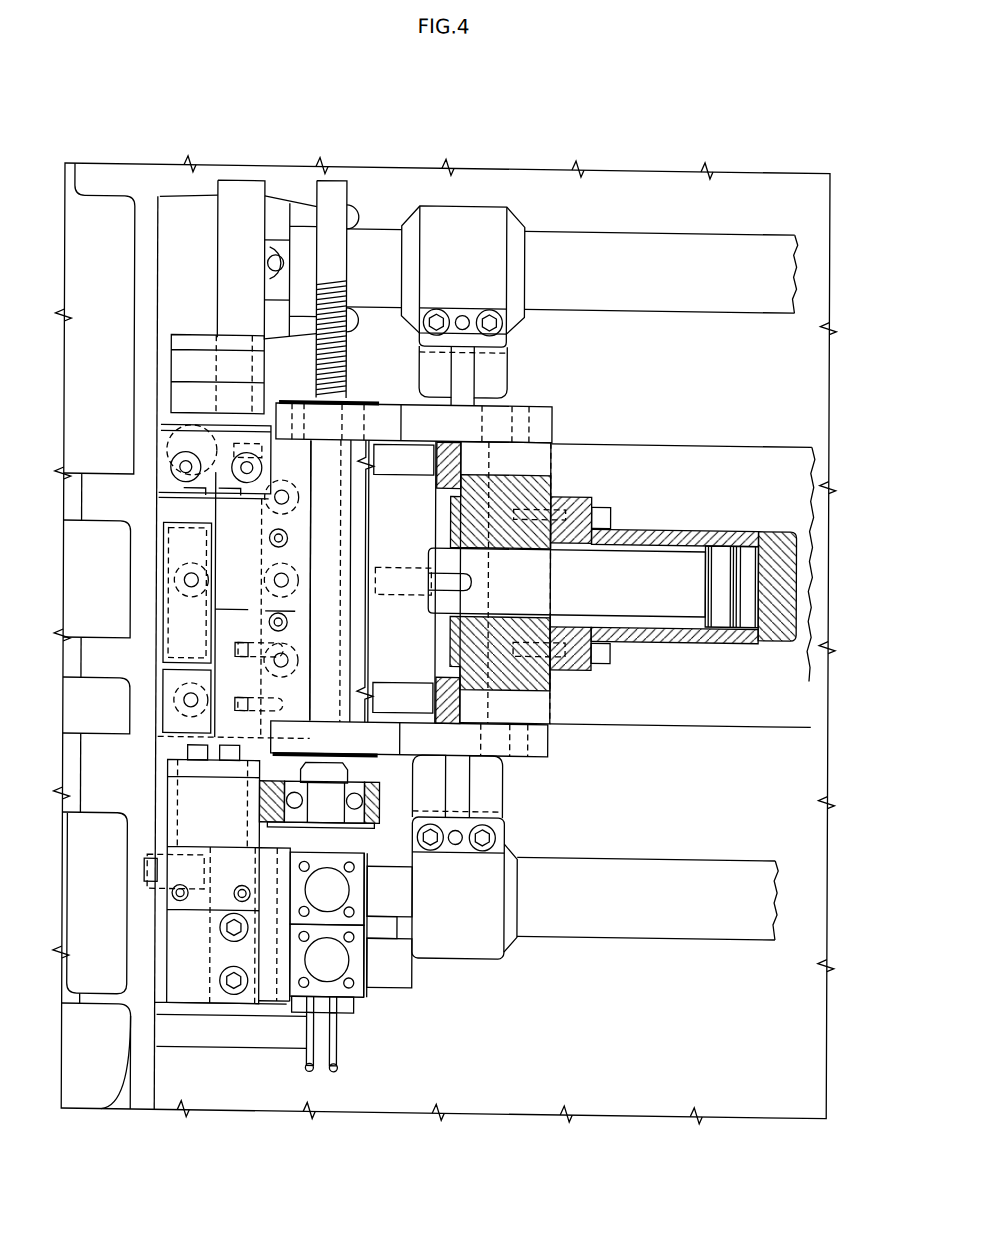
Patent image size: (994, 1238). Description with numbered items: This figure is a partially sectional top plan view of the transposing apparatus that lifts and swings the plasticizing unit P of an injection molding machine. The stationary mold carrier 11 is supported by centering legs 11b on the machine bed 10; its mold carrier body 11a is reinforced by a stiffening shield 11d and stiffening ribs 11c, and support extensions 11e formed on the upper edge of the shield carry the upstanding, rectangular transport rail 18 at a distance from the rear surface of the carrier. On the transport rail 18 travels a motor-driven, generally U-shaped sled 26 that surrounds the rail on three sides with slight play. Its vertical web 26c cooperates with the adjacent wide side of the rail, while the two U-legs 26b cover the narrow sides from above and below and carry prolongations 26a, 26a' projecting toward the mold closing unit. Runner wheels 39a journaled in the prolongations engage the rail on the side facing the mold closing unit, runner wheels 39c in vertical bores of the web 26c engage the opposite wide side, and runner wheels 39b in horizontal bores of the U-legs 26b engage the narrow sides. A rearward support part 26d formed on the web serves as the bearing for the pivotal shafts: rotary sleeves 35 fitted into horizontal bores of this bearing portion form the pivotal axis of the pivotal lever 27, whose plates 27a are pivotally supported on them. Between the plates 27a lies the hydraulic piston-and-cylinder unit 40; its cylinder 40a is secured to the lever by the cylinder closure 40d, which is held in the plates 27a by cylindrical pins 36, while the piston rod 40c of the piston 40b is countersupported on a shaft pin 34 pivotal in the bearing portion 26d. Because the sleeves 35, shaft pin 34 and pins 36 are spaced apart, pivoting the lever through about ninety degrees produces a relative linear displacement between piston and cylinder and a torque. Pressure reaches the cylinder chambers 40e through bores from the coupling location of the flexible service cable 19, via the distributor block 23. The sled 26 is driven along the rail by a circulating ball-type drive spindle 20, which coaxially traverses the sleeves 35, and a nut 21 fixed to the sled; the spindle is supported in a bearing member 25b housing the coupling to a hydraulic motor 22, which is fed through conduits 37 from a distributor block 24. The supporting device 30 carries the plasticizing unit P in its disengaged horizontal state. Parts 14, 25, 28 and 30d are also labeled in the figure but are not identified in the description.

The machine bed 10 is at (433, 1078).
The stationary mold carrier 11 is at (125, 158).
The mold carrier body 11a is at (118, 815).
The centering legs 11b is at (268, 1085).
The stiffening rib 11c is at (110, 184).
The stiffening shield 11d is at (145, 295).
The support extensions 11e is at (190, 178).
The work table 14 is at (705, 451).
The transport rail 18 is at (240, 211).
The flexible service cable 19 is at (195, 328).
The circulating ball-type drive spindle 20 is at (333, 201).
The circulating ball-type nut 21 is at (365, 397).
The hydraulic motor 22 is at (400, 833).
The distributor block 23 is at (420, 885).
The distributor block 24 is at (420, 968).
The drive unit 25 is at (330, 796).
The bearing member 25b is at (272, 805).
The sled 26 is at (375, 608).
The prolongation 26a is at (178, 421).
The prolongation 26a' is at (142, 592).
The U-legs 26b is at (209, 504).
The vertical web 26c is at (280, 580).
The bearing portion 26d is at (327, 656).
The pivotal lever 27 is at (557, 410).
The plates 27a is at (538, 421).
The guide bar 28 is at (655, 257).
The supporting device 30 is at (455, 198).
The clamp head bolts 30d is at (477, 234).
The shaft pin 34 is at (402, 426).
The rotary sleeves 35 is at (318, 398).
The cylindrical pins 36 is at (513, 401).
The conduits 37 is at (342, 1046).
The runner wheels 39a is at (177, 685).
The runner wheels 39b is at (235, 675).
The runner wheels 39c is at (270, 570).
The hydraulic piston-and-cylinder unit 40 is at (675, 515).
The cylinder 40a is at (730, 529).
The piston 40b is at (722, 598).
The piston rod 40c is at (620, 582).
The cylinder closure 40d is at (523, 484).
The cylinder chambers 40e is at (762, 588).
The plasticizing unit P is at (742, 426).